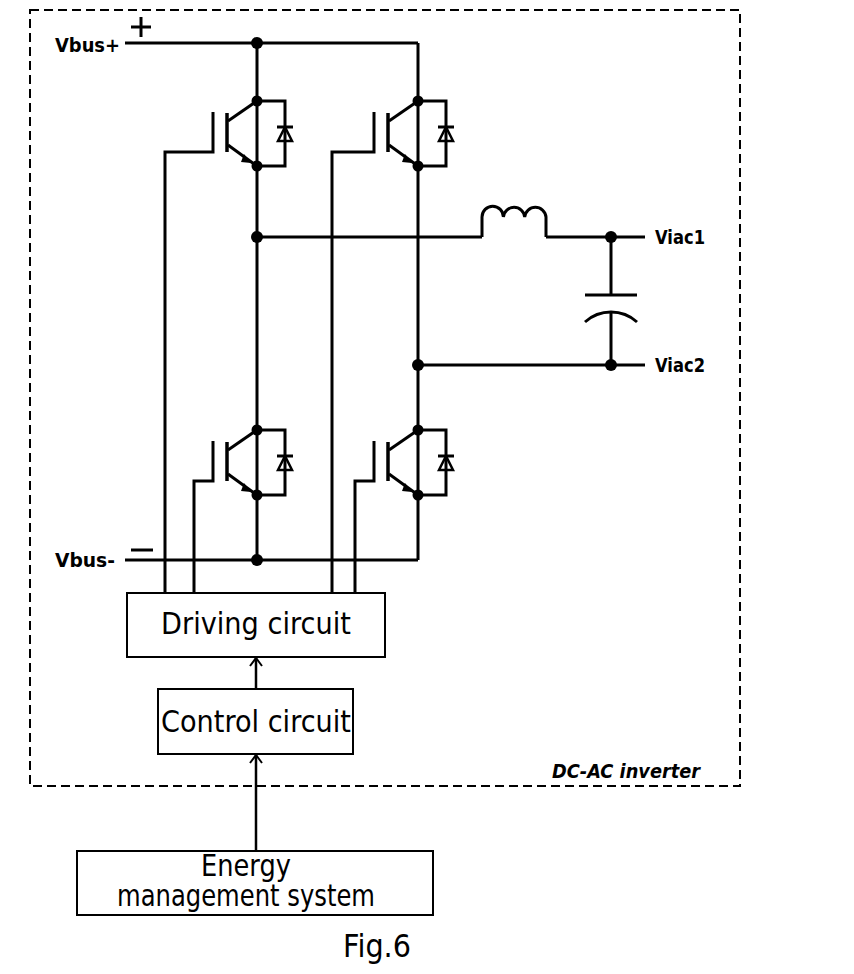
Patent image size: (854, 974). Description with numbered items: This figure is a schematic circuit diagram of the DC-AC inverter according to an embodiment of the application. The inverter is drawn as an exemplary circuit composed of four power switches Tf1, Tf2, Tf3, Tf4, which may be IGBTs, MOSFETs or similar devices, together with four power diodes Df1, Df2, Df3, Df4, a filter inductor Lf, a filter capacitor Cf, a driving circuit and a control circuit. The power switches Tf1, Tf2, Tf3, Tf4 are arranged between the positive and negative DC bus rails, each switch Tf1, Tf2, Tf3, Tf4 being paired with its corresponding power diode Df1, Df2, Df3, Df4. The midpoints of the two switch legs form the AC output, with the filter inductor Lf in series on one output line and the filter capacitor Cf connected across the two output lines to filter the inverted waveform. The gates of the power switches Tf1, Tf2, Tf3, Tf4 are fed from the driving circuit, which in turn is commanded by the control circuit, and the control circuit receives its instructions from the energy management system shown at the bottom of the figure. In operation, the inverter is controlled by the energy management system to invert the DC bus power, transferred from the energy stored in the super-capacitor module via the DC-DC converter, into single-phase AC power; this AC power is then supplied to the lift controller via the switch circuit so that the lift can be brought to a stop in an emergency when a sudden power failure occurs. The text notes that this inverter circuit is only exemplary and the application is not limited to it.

The power switch Tf1 is at (214, 343).
The power diode Df1 is at (292, 133).
The power switch Tf2 is at (220, 508).
The power diode Df2 is at (292, 462).
The power switch Tf3 is at (378, 343).
The power diode Df3 is at (454, 133).
The power switch Tf4 is at (380, 508).
The power diode Df4 is at (454, 462).
The filter inductor Lf is at (514, 208).
The filter capacitor Cf is at (624, 301).